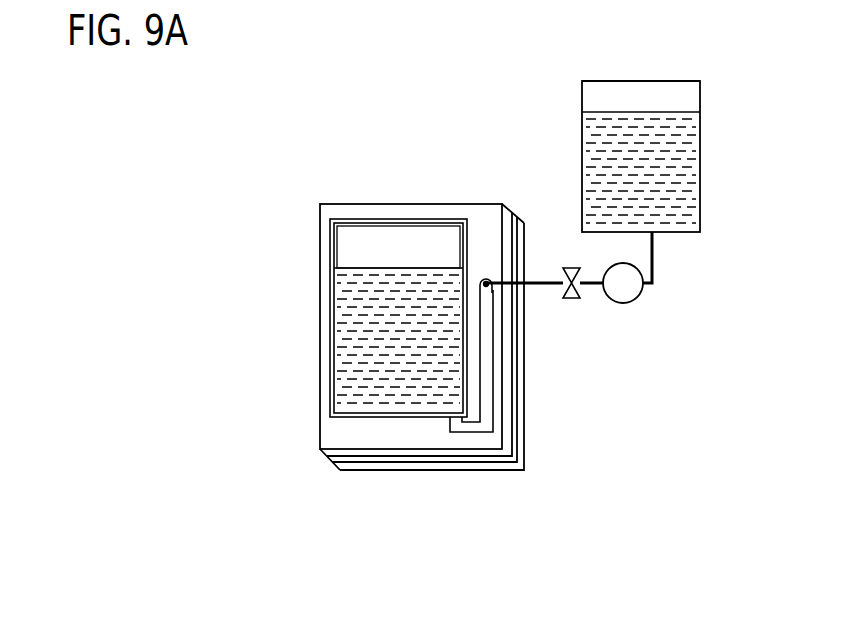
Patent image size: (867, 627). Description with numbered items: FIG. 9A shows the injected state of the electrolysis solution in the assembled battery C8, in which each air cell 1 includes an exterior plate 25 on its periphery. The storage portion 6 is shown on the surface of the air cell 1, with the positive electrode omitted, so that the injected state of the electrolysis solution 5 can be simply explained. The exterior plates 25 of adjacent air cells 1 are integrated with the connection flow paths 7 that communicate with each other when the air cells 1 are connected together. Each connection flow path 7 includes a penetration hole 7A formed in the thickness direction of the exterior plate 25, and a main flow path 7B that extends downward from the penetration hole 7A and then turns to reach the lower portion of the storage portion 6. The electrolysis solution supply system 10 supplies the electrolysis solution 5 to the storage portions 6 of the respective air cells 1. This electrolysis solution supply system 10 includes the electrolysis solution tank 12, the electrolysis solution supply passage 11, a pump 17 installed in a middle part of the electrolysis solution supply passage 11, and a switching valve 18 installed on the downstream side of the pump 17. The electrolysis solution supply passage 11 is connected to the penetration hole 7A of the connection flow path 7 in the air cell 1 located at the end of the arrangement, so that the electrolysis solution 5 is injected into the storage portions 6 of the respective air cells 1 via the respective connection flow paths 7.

The assembled battery C8 is at (438, 132).
The air cell 1 is at (410, 452).
The exterior plate 25 is at (340, 428).
The electrolysis solution 5 is at (358, 343).
The storage portion 6 is at (358, 248).
The connection flow path 7 is at (622, 322).
The penetration hole 7A is at (485, 298).
The main flow path 7B is at (488, 387).
The electrolysis solution supply passage 11 is at (657, 253).
The switching valve 18 is at (571, 267).
The pump 17 is at (634, 299).
The electrolysis solution supply system 10 is at (722, 118).
The electrolysis solution tank 12 is at (618, 80).